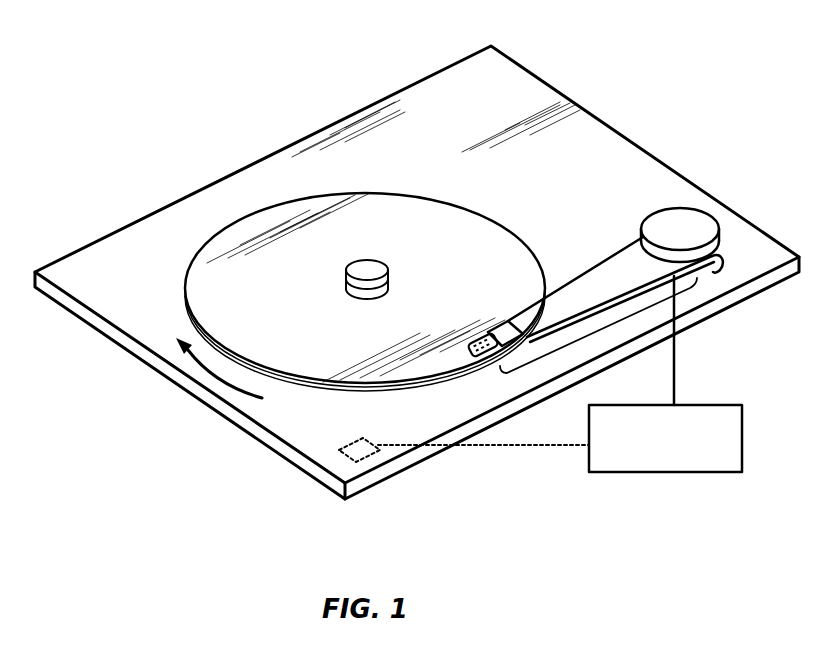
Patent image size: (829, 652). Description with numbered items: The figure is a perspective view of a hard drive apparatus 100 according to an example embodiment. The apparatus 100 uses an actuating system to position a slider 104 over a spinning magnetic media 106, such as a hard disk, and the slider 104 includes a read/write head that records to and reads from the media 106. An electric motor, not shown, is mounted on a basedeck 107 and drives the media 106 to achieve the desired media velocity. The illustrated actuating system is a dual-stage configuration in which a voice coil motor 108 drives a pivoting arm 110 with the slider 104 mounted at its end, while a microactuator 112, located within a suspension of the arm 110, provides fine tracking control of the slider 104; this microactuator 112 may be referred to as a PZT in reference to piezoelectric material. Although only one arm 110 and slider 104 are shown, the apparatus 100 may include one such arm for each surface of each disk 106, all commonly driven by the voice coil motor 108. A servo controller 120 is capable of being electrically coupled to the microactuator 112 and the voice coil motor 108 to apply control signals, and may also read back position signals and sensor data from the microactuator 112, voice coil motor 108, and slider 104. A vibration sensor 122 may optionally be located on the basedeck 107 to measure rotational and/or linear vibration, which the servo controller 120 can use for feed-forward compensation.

The hard drive apparatus 100 is at (146, 175).
The slider 104 is at (482, 337).
The magnetic media 106 is at (412, 205).
The basedeck 107 is at (287, 451).
The voice coil motor 108 is at (685, 226).
The arm 110 is at (593, 335).
The microactuator 112 is at (507, 324).
The servo controller 120 is at (623, 468).
The vibration sensor 122 is at (370, 458).